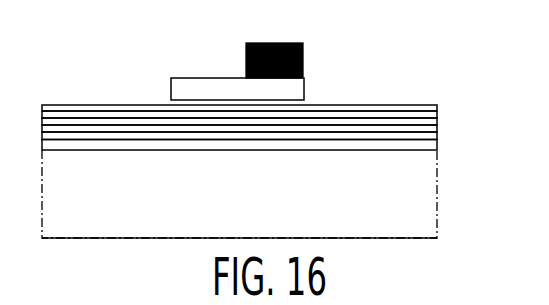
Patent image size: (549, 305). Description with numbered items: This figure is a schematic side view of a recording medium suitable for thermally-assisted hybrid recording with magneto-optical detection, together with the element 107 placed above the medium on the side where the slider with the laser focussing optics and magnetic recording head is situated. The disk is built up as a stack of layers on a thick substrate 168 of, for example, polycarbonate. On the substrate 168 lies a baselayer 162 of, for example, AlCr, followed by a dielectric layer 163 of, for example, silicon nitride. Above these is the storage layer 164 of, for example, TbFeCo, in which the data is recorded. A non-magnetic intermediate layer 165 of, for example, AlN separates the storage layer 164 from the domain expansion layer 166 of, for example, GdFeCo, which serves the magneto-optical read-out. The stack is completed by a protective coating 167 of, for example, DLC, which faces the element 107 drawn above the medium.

The magnetic pole / coil element 107 is at (300, 90).
The baselayer 162 is at (430, 150).
The dielectric layer 163 is at (436, 134).
The storage layer 164 is at (432, 128).
The non-magnetic intermediate layer 165 is at (438, 117).
The domain expansion layer 166 is at (422, 113).
The protective coating 167 is at (388, 108).
The substrate 168 is at (427, 214).